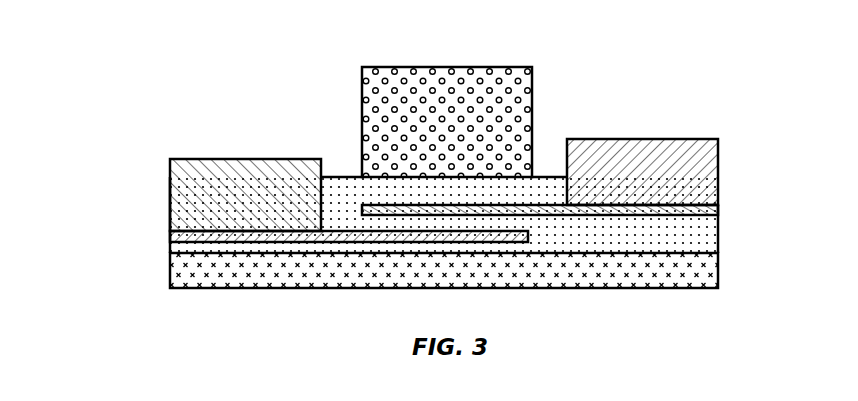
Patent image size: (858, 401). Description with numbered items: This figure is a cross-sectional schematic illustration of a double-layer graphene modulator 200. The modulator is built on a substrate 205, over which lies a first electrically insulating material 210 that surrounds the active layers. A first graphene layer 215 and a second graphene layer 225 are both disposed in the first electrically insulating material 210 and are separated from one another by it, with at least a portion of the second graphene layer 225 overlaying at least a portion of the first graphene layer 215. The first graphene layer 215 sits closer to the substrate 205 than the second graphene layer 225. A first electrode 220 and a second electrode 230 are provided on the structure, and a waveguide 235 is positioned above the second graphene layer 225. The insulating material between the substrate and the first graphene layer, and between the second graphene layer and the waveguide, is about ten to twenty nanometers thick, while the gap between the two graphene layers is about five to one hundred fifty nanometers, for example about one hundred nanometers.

The double-layer graphene modulator 200 is at (457, 151).
The substrate 205 is at (703, 266).
The first electrically insulating material 210 is at (703, 233).
The first graphene layer 215 is at (178, 237).
The first electrode 220 is at (237, 172).
The second graphene layer 225 is at (700, 211).
The second electrode 230 is at (623, 150).
The waveguide 235 is at (445, 80).